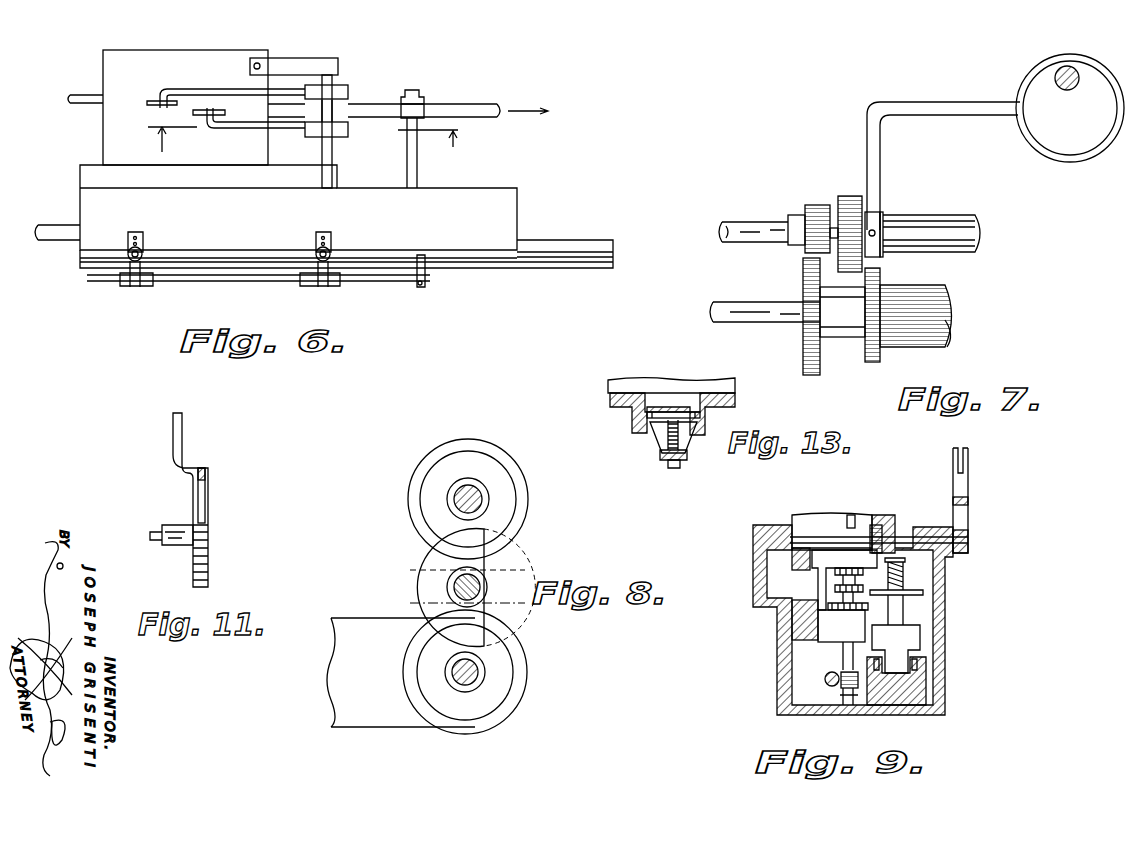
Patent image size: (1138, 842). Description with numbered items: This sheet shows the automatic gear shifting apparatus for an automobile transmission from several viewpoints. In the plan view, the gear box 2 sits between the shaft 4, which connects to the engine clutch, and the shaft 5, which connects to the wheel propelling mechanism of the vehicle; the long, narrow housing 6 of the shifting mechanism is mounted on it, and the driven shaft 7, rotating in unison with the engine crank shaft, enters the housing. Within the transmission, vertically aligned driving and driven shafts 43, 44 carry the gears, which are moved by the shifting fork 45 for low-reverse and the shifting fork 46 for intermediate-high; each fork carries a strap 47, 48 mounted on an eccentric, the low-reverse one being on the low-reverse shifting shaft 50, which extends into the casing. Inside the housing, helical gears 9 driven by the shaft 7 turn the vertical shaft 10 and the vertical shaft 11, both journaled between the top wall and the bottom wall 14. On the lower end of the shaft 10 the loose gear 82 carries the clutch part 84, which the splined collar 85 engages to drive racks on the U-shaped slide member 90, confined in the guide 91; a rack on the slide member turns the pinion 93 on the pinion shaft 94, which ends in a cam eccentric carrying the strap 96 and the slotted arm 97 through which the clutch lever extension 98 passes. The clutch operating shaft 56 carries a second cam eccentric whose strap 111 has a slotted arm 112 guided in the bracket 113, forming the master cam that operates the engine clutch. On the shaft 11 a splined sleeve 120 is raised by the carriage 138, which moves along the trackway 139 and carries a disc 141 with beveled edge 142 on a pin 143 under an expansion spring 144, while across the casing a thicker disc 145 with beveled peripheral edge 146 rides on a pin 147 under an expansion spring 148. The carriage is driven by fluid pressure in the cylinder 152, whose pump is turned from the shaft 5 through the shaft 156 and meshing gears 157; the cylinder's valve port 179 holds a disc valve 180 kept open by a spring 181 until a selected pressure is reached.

In FIG. 6, the gear box 2 is at (166, 47).
In FIG. 6, the shaft 4 is at (83, 93).
In FIG. 7, the shaft 4 is at (1106, 86).
In FIG. 6, the shaft 5 is at (484, 104).
In FIG. 6, the housing 6 is at (298, 207).
In FIG. 9, the housing 6 is at (777, 664).
In FIG. 6, the driven shaft 7 is at (57, 228).
In FIG. 9, the driven shaft 7 is at (824, 680).
In FIG. 9, the helical gear 9 is at (842, 668).
In FIG. 9, the shaft 10 is at (843, 655).
In FIG. 8, the shaft 11 is at (465, 572).
In FIG. 9, the bottom wall 14 is at (920, 708).
In FIG. 7, the driving shaft 43 is at (743, 224).
In FIG. 7, the driven shaft 44 is at (738, 303).
In FIG. 6, the shifting fork 45 is at (250, 128).
In FIG. 7, the shifting fork 45 is at (880, 172).
In FIG. 6, the shifting fork 46 is at (200, 92).
In FIG. 6, the strap 47 is at (348, 130).
In FIG. 7, the strap 47 is at (1065, 162).
In FIG. 6, the strap 48 is at (348, 88).
In FIG. 6, the low-reverse shifting shaft 50 is at (322, 143).
In FIG. 7, the low-reverse shifting shaft 50 is at (1070, 68).
In FIG. 11, the clutch operating shaft 56 is at (150, 535).
In FIG. 9, the gear 82 is at (841, 626).
In FIG. 9, the clutch part 84 is at (865, 603).
In FIG. 9, the collar 85 is at (792, 615).
In FIG. 9, the slide member 90 is at (812, 588).
In FIG. 9, the guide 91 is at (790, 568).
In FIG. 9, the pinion 93 is at (877, 524).
In FIG. 9, the pinion shaft 94 is at (928, 537).
In FIG. 6, the strap 96 is at (128, 288).
In FIG. 9, the strap 96 is at (968, 520).
In FIG. 6, the slotted arm 97 is at (146, 264).
In FIG. 9, the slotted arm 97 is at (968, 483).
In FIG. 6, the clutch lever extension 98 is at (384, 286).
In FIG. 11, the clutch lever extension 98 is at (206, 474).
In FIG. 6, the strap 111 is at (332, 287).
In FIG. 11, the strap 111 is at (210, 562).
In FIG. 6, the slotted arm 112 is at (316, 271).
In FIG. 11, the slotted arm 112 is at (210, 500).
In FIG. 6, the bracket 113 is at (331, 246).
In FIG. 8, the sleeve 120 is at (466, 604).
In FIG. 8, the carriage 138 is at (416, 592).
In FIG. 9, the carriage 138 is at (920, 637).
In FIG. 9, the trackway 139 is at (926, 686).
In FIG. 8, the disc 141 is at (500, 698).
In FIG. 9, the disc 141 is at (923, 592).
In FIG. 8, the beveled edge 142 is at (520, 678).
In FIG. 8, the pin 143 is at (483, 668).
In FIG. 8, the expansion spring 144 is at (458, 688).
In FIG. 9, the expansion spring 144 is at (905, 569).
In FIG. 8, the disc 145 is at (430, 507).
In FIG. 8, the peripheral edge 146 is at (517, 471).
In FIG. 8, the pin 147 is at (467, 485).
In FIG. 8, the expansion spring 148 is at (490, 500).
In FIG. 6, the cylinder 152 is at (572, 246).
In FIG. 13, the cylinder 152 is at (740, 398).
In FIG. 6, the shaft 156 is at (418, 167).
In FIG. 6, the meshing gears 157 is at (422, 100).
In FIG. 13, the valve port 179 is at (672, 388).
In FIG. 13, the disc valve 180 is at (688, 412).
In FIG. 13, the spring 181 is at (658, 448).